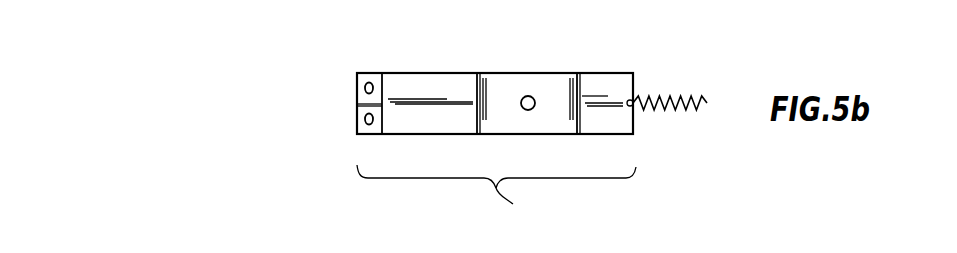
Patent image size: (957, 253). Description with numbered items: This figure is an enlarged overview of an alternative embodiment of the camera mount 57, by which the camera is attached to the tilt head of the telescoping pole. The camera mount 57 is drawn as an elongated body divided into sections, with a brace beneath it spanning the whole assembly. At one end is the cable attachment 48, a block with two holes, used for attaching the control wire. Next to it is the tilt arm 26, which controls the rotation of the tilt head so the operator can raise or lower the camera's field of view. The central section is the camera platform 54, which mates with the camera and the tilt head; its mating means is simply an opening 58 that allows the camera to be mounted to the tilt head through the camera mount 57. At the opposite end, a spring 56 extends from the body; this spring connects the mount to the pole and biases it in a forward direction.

The tilt arm 26 is at (419, 82).
The cable attachment 48 is at (362, 95).
The camera platform 54 is at (505, 120).
The opening 58 is at (530, 95).
The spring 56 is at (656, 92).
The camera mount 57 is at (496, 193).